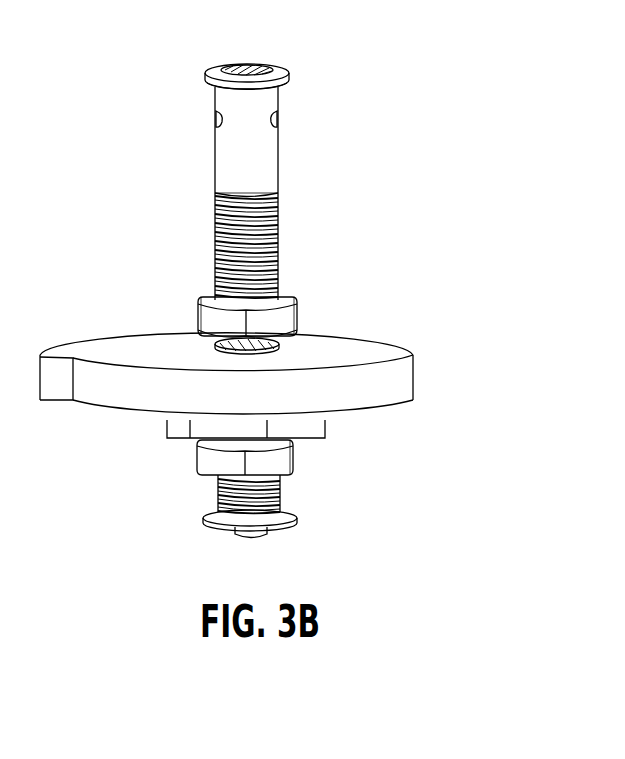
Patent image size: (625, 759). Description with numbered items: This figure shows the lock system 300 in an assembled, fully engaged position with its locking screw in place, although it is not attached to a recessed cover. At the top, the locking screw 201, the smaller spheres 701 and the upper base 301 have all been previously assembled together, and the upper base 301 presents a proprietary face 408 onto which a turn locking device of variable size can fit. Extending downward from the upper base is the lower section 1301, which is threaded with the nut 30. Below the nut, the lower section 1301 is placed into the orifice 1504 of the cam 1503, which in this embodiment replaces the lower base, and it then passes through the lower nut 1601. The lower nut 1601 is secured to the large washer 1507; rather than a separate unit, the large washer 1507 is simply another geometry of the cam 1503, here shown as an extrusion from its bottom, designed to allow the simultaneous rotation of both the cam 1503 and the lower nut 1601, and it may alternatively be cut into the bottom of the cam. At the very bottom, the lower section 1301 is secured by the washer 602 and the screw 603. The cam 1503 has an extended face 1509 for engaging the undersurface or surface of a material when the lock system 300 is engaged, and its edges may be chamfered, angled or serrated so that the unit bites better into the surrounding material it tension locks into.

The locking screw 201 is at (232, 65).
The proprietary face 408 is at (285, 78).
The smaller spheres 701 is at (213, 120).
The upper base 301 is at (273, 182).
The lower section 1301 is at (218, 247).
The lock system 300 is at (285, 282).
The nut 30 is at (198, 318).
The orifice 1504 is at (288, 347).
The cam 1503 is at (413, 377).
The extended face 1509 is at (57, 387).
The large washer 1507 is at (325, 428).
The lower nut 1601 is at (295, 458).
The washer 602 is at (297, 517).
The screw 603 is at (252, 540).